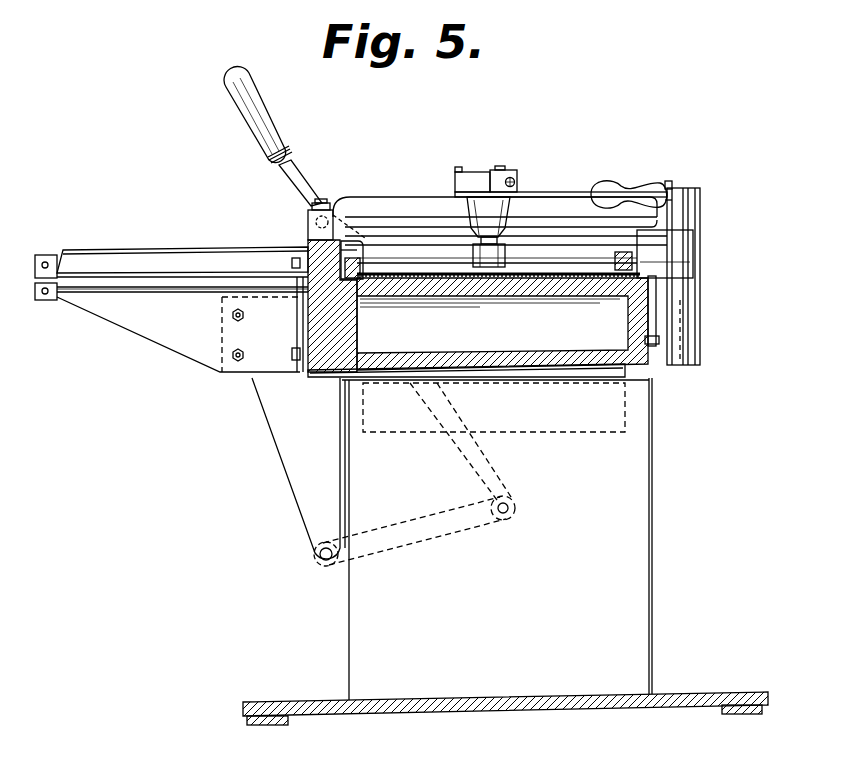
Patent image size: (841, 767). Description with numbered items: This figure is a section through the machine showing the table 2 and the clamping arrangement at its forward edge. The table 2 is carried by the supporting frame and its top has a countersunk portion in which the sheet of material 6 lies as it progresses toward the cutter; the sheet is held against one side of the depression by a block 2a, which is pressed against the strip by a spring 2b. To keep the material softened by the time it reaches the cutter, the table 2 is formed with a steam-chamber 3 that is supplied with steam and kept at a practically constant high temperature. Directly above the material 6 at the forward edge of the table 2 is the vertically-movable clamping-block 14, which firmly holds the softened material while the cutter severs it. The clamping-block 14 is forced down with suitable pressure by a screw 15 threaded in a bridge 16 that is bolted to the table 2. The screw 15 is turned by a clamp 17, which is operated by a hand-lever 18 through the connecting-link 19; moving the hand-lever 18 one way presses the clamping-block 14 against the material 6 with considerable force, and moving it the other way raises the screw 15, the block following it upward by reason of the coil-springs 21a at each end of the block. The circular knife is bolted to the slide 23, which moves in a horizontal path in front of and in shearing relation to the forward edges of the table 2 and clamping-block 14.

The table 2 is at (307, 320).
The block 2a is at (655, 245).
The spring 2b is at (652, 305).
The steam-chamber 3 is at (545, 293).
The sheet of material 6 is at (583, 295).
The clamping-block 14 is at (440, 262).
The screw 15 is at (497, 168).
The bridge 16 is at (572, 207).
The clamp 17 is at (471, 176).
The hand-lever 18 is at (628, 186).
The connecting-link 19 is at (543, 196).
The coil-springs 21a is at (352, 262).
The slide 23 is at (183, 250).